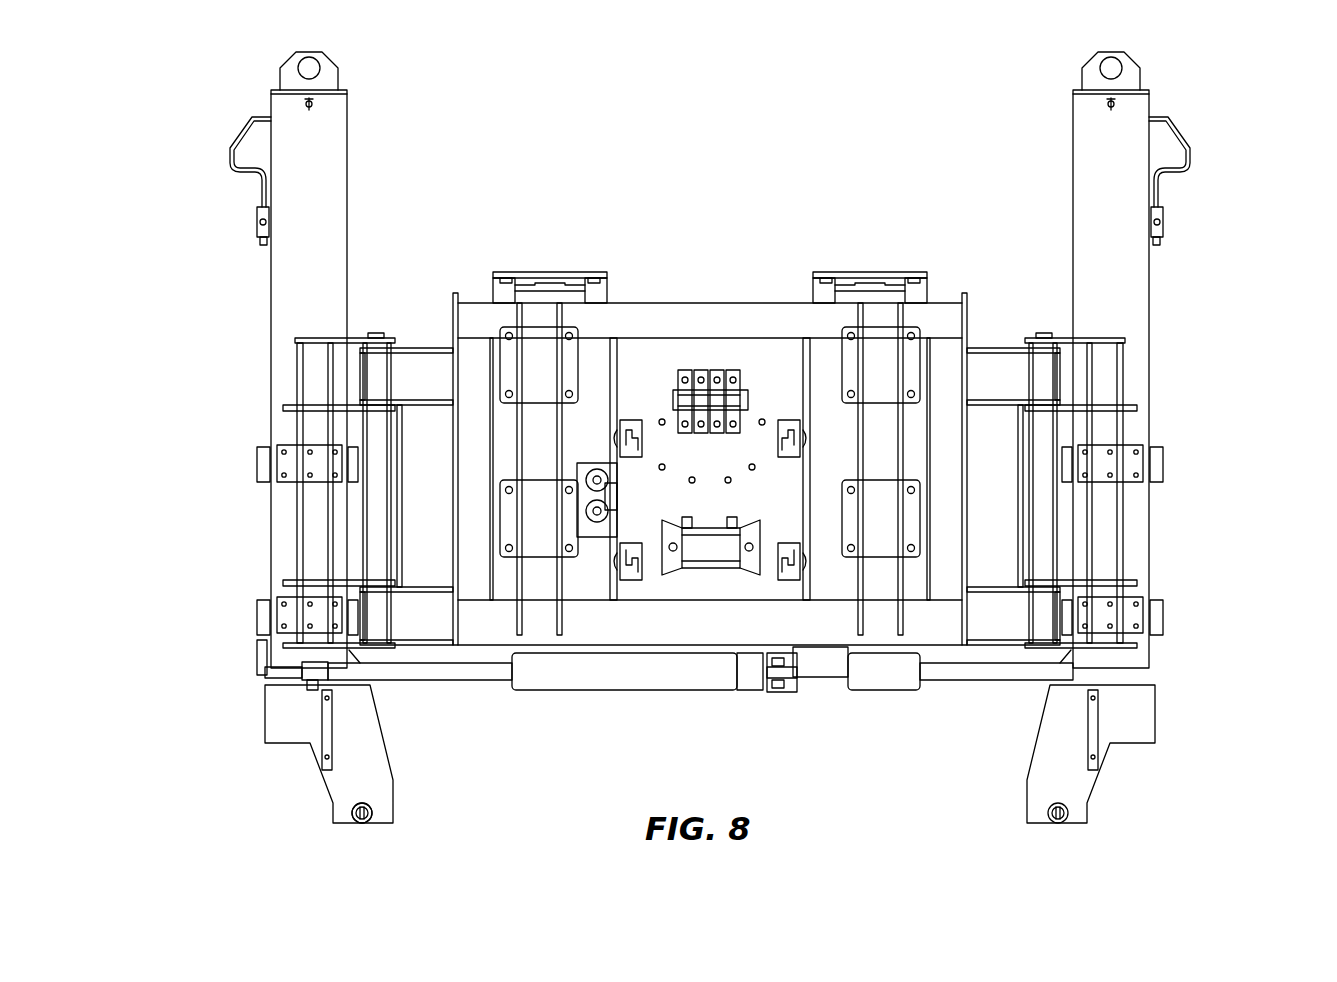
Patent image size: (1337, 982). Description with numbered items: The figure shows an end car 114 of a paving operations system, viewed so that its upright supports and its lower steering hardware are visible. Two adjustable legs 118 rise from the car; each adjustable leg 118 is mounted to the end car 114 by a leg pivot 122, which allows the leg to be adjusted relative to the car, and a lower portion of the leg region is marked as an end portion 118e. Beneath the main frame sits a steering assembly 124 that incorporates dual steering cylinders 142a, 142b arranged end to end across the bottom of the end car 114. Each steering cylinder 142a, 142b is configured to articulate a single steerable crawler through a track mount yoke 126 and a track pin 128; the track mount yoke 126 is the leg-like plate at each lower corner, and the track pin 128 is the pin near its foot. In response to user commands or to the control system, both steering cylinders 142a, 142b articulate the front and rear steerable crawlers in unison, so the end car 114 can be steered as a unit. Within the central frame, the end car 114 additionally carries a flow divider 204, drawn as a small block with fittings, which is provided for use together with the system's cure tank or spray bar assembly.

The end car 114 is at (1244, 184).
The adjustable leg 118 is at (1090, 253).
The post lower bracket 118e is at (320, 668).
The leg pivot 122 is at (378, 340).
The steering assembly 124 is at (241, 682).
The track mount yoke 126 is at (1133, 728).
The track pin 128 is at (364, 803).
The steering cylinder 142a is at (672, 674).
The steering cylinder 142b is at (860, 678).
The flow divider 204 is at (712, 548).